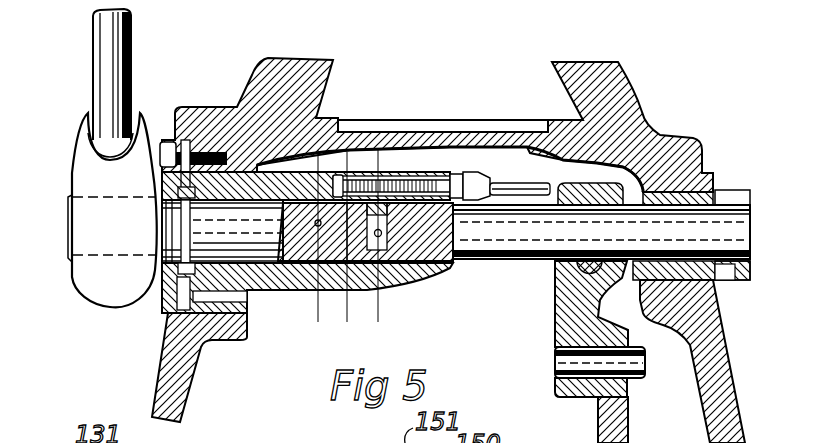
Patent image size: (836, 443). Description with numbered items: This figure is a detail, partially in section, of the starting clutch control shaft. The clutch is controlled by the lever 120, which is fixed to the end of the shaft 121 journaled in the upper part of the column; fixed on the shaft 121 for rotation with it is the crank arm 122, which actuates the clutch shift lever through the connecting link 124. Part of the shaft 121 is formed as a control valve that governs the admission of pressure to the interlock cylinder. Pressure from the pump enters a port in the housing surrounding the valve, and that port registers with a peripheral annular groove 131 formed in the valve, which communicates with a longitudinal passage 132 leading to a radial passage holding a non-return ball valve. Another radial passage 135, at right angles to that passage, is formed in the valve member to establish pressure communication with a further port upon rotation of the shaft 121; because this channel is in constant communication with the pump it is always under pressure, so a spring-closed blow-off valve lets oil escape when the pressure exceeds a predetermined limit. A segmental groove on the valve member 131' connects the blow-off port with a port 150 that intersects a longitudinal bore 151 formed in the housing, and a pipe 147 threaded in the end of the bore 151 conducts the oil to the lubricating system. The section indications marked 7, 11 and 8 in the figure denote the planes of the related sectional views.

The lever 120 is at (107, 72).
The shaft 121 is at (68, 243).
The crank arm 122 is at (567, 327).
The connecting link 124 is at (600, 430).
The peripheral annular groove 131 is at (268, 172).
The valve member 131' is at (437, 292).
The longitudinal passage 132 is at (393, 287).
The radial passage 135 is at (395, 238).
The pipe 147 is at (533, 187).
The port 150 is at (360, 178).
The longitudinal bore 151 is at (416, 177).
The section line 7 is at (313, 318).
The section line 11 is at (323, 318).
The section line 8 is at (373, 318).